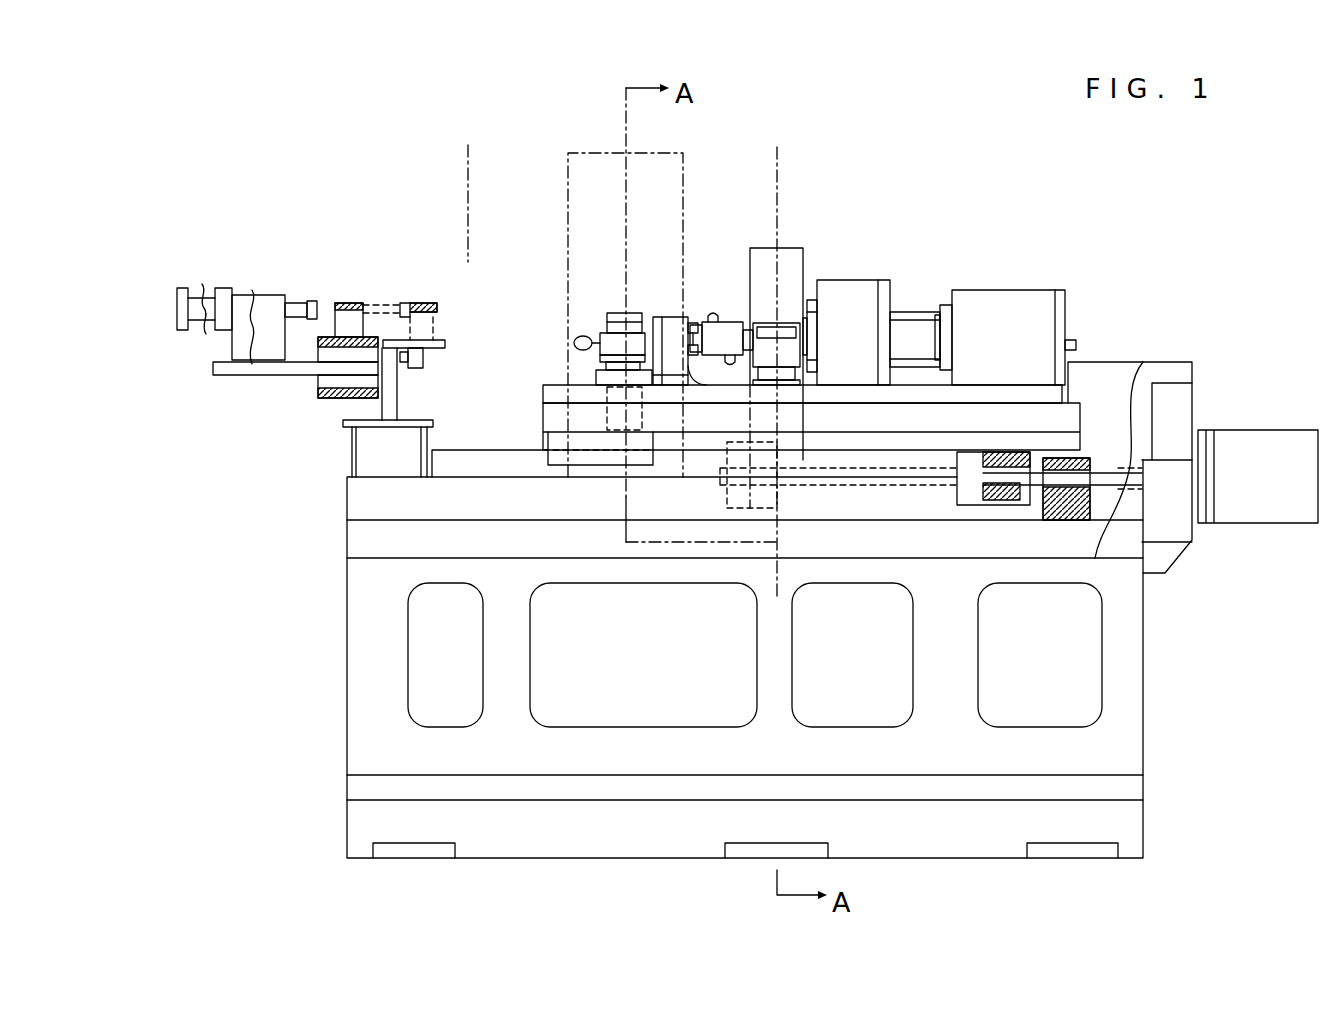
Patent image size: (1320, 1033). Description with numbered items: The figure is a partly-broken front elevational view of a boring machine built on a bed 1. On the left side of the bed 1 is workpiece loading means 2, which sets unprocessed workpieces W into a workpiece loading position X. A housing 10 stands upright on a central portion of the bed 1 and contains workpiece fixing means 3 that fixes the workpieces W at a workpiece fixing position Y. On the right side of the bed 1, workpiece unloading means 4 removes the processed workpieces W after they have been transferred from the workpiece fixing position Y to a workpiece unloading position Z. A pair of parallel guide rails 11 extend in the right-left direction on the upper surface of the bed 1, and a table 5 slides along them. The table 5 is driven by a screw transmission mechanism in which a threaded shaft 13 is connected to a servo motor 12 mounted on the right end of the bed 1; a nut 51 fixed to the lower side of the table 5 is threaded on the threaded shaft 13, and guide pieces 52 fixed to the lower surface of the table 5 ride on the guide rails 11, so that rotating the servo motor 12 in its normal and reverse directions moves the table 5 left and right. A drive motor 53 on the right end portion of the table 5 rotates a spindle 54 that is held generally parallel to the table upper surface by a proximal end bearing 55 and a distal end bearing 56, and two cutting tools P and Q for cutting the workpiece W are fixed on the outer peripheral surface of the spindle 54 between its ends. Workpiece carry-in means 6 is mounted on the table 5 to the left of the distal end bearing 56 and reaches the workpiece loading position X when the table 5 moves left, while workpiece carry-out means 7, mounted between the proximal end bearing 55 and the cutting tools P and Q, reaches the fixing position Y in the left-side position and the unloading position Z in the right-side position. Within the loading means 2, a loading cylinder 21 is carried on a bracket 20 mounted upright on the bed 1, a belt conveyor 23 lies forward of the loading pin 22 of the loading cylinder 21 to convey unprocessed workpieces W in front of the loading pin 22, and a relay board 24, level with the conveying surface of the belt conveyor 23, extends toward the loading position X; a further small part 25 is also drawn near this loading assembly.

The bed 1 is at (372, 636).
The workpiece loading means 2 is at (277, 264).
The workpiece fixing means 3 is at (585, 291).
The housing 10 is at (568, 177).
The workpiece unloading means 4 is at (776, 343).
The table 5 is at (1068, 418).
The workpiece carry-in means 6 is at (590, 320).
The workpiece carry-out means 7 is at (797, 313).
The guide rails 11 is at (462, 450).
The servo motor 12 is at (1266, 450).
The threaded shaft 13 is at (1103, 480).
The bracket 20 is at (388, 405).
The loading cylinder 21 is at (242, 290).
The loading pin 22 is at (298, 292).
The belt conveyor 23 is at (320, 342).
The relay board 24 is at (447, 345).
The bolt 25 is at (420, 368).
The nut 51 is at (988, 494).
The guide pieces 52 is at (603, 465).
The drive motor 53 is at (1005, 296).
The spindle 54 is at (725, 256).
The proximal end bearing 55 is at (853, 293).
The distal end bearing 56 is at (673, 325).
The workpiece W is at (351, 302).
The cutting tool P is at (710, 314).
The cutting tool Q is at (728, 362).
The workpiece loading position X is at (468, 175).
The workpiece fixing position Y is at (625, 140).
The workpiece unloading position Z is at (779, 175).